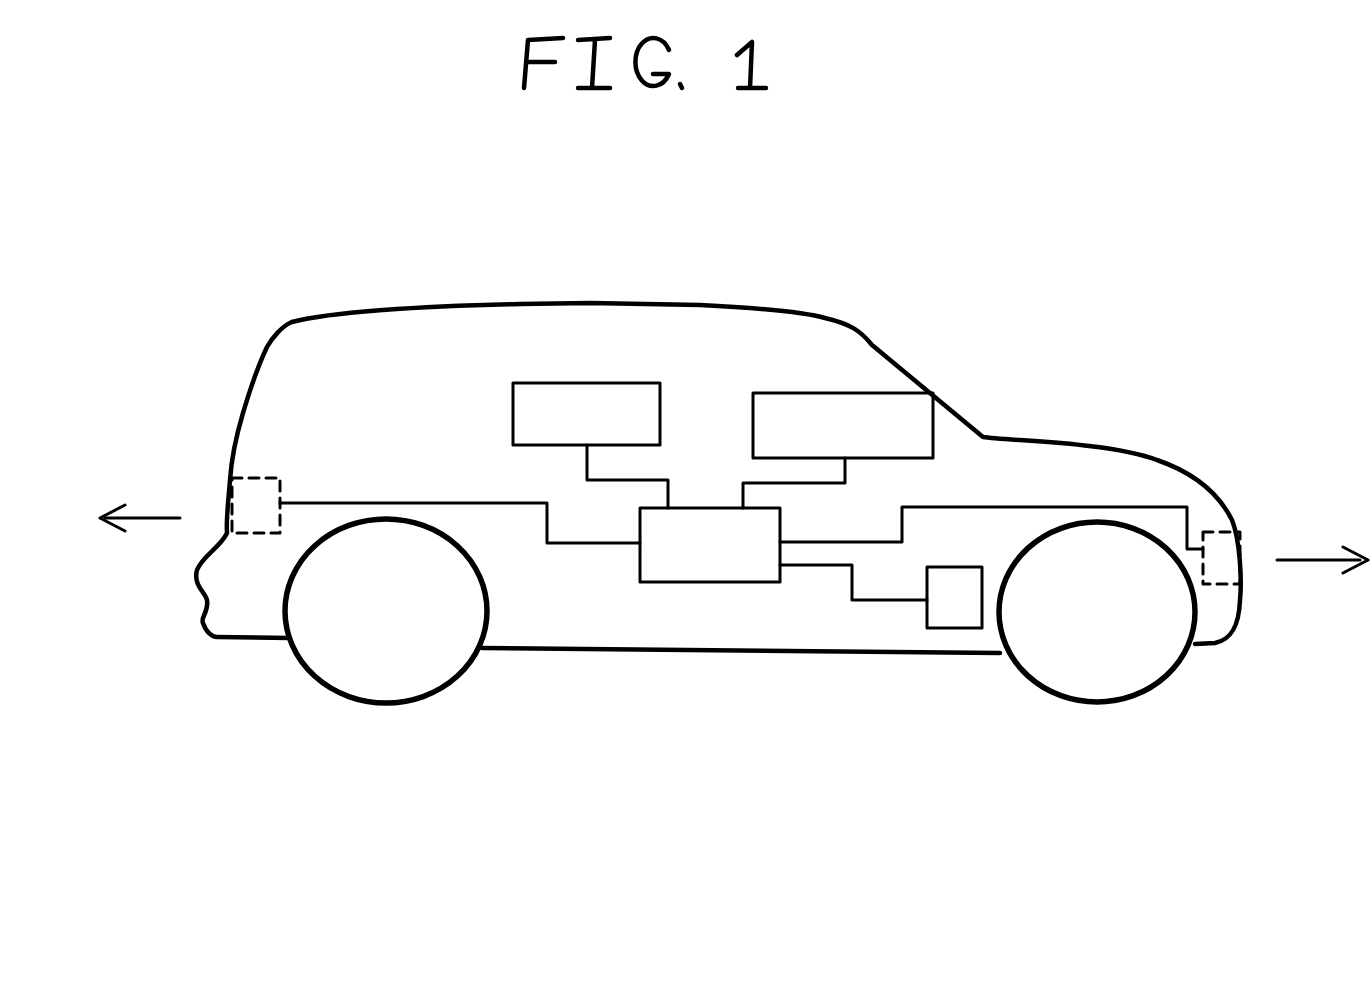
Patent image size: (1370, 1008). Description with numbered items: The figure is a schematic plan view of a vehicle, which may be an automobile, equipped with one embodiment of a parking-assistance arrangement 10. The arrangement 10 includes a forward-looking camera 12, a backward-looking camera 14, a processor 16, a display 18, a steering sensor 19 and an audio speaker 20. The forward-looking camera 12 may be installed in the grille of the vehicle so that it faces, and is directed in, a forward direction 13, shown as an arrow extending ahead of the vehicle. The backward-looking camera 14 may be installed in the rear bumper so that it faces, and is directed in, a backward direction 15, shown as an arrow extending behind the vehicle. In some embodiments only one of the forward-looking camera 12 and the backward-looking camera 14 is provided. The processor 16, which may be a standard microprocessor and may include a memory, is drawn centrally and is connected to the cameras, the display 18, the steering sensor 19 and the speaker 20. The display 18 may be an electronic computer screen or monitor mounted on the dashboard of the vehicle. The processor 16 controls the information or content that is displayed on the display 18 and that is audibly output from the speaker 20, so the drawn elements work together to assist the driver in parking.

The parking-assistance arrangement 10 is at (450, 767).
The forward-looking camera 12 is at (1227, 560).
The forward direction 13 is at (1320, 563).
The backward-looking camera 14 is at (245, 502).
The backward direction 15 is at (145, 520).
The processor 16 is at (723, 582).
The display 18 is at (853, 393).
The steering sensor 19 is at (881, 596).
The audio speaker 20 is at (587, 383).